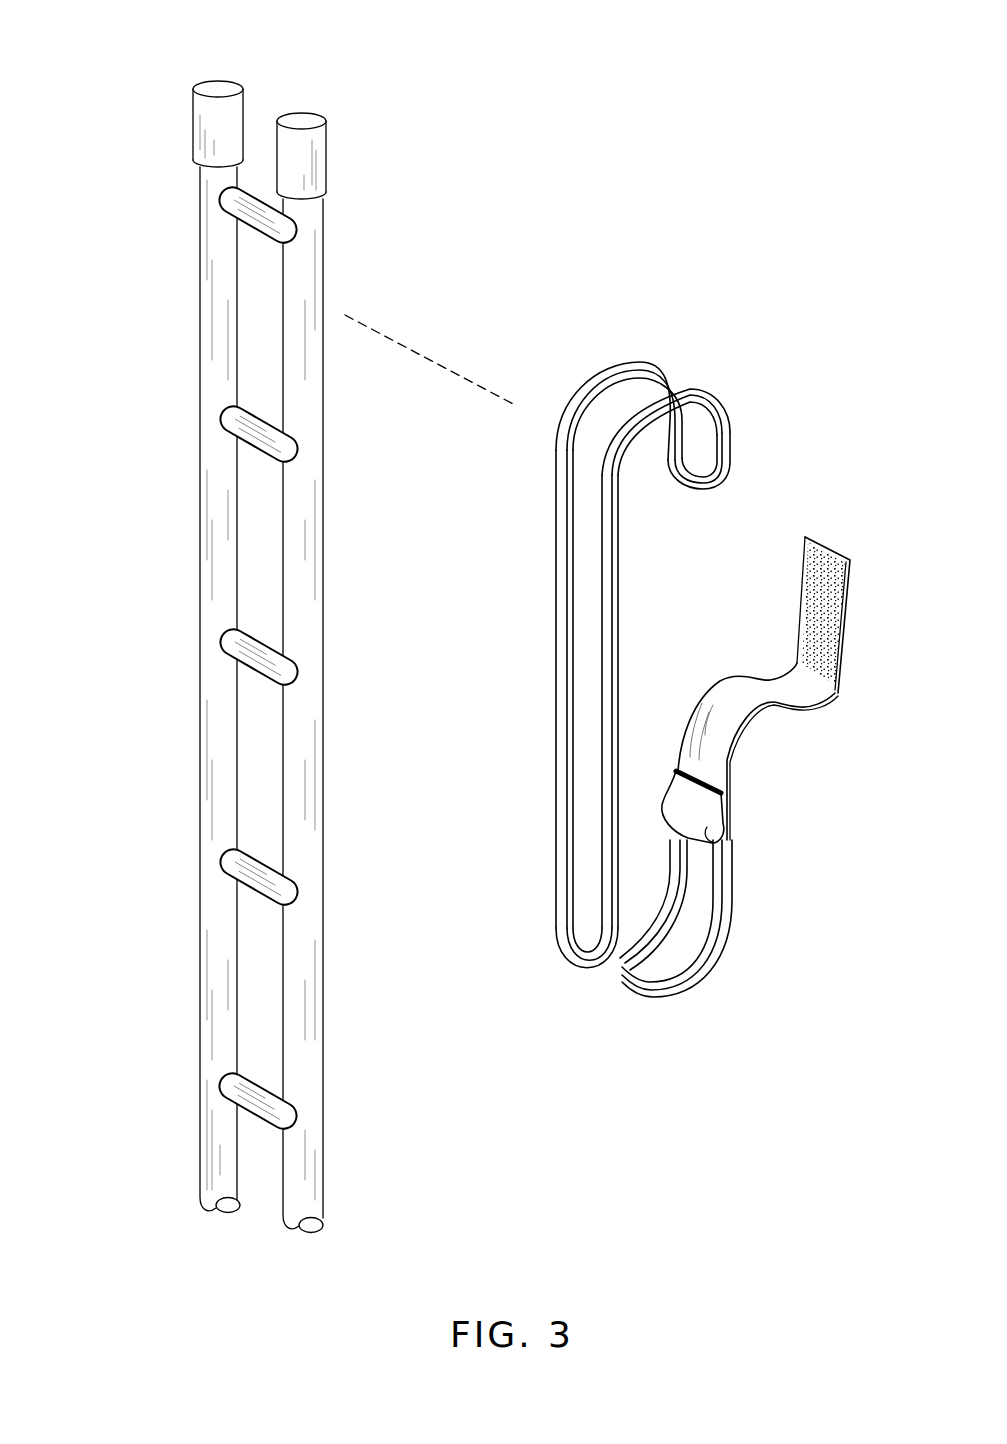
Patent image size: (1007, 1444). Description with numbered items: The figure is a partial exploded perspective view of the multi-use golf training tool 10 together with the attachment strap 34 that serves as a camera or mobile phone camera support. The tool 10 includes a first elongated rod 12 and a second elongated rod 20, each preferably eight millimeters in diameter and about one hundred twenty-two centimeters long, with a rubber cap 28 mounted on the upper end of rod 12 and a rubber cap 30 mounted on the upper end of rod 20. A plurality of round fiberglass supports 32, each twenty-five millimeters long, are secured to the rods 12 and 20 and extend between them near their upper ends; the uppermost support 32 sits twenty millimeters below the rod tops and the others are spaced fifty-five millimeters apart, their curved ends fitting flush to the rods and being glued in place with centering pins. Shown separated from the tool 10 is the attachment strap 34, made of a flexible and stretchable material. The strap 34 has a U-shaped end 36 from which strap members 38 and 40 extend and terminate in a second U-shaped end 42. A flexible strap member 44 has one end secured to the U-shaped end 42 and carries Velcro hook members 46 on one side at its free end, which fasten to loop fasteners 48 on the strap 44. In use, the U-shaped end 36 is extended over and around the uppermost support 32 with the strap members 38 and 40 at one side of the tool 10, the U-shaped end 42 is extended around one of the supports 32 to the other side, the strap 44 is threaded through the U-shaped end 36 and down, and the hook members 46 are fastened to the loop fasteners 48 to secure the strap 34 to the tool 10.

The multi-use golf training tool 10 is at (390, 115).
The first elongated rod 12 is at (200, 300).
The second elongated rod 20 is at (316, 296).
The rubber cap 28 is at (206, 136).
The rubber cap 30 is at (316, 150).
The round fiberglass supports 32 is at (275, 440).
The attachment strap 34 is at (673, 342).
The U-shaped end 36 is at (726, 460).
The strap member 38 is at (612, 601).
The strap member 40 is at (566, 592).
The U-shaped end 42 is at (726, 832).
The flexible strap member 44 is at (790, 702).
The Velcro hook members 46 is at (836, 620).
The loop fasteners 48 is at (724, 736).